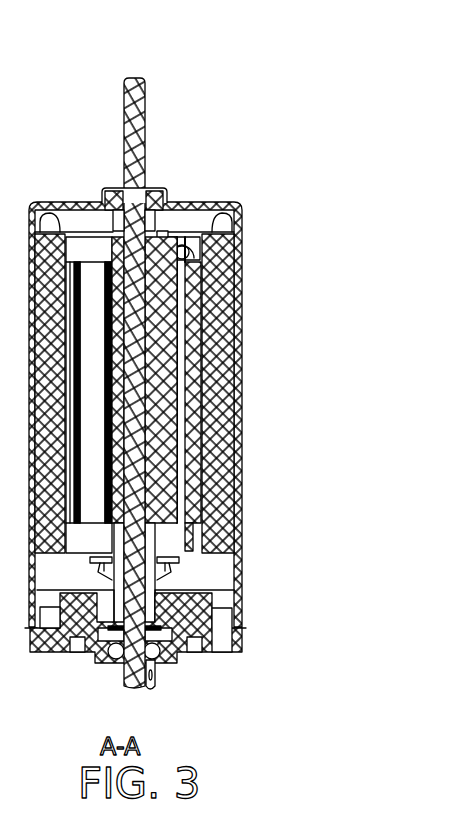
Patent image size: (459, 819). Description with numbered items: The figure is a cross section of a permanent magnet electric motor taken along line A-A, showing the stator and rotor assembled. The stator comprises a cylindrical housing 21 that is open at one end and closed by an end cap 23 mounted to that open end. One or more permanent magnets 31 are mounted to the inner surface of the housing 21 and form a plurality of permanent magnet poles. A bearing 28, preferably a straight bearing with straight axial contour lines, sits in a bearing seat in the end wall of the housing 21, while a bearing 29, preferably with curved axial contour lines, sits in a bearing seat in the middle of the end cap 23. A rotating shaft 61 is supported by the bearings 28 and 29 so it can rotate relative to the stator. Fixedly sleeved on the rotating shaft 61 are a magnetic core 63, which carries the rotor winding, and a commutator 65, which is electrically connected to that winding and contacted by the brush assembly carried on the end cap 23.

The cylindrical housing 21 is at (237, 330).
The end cap 23 is at (227, 638).
The bearing 28 is at (155, 204).
The bearing 29 is at (150, 652).
The permanent magnet 31 is at (216, 366).
The rotating shaft 61 is at (136, 145).
The magnetic core 63 is at (162, 445).
The commutator 65 is at (155, 580).